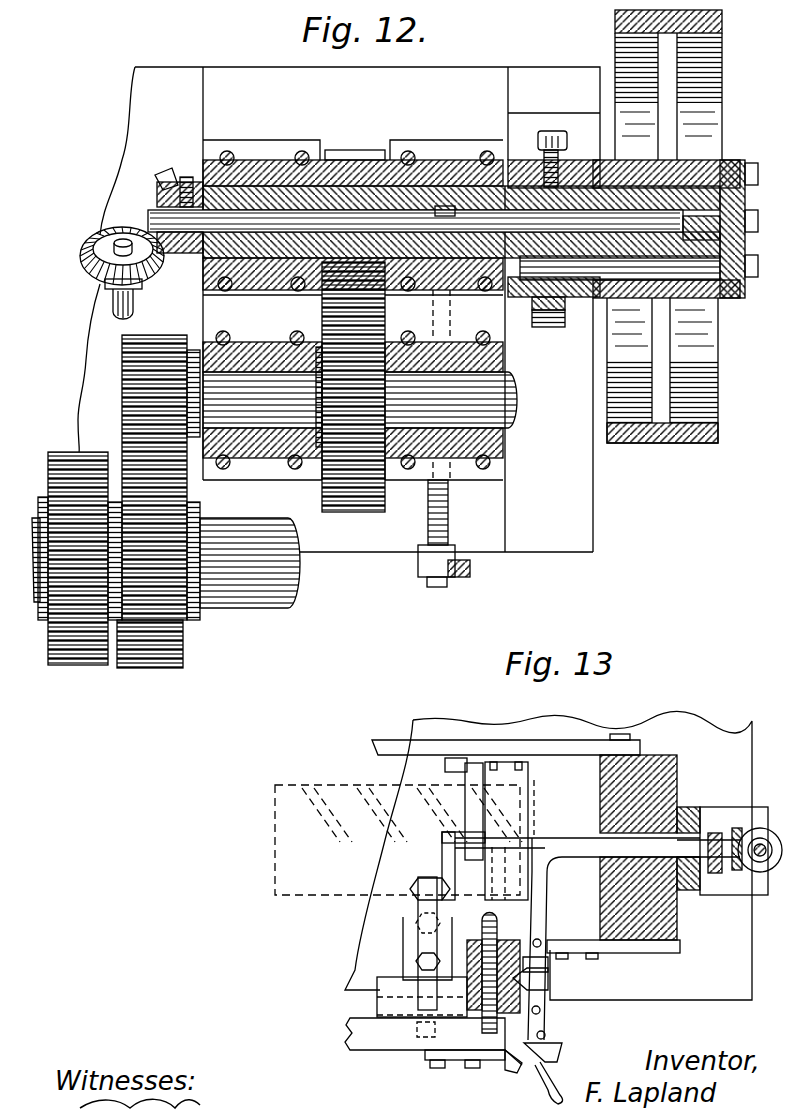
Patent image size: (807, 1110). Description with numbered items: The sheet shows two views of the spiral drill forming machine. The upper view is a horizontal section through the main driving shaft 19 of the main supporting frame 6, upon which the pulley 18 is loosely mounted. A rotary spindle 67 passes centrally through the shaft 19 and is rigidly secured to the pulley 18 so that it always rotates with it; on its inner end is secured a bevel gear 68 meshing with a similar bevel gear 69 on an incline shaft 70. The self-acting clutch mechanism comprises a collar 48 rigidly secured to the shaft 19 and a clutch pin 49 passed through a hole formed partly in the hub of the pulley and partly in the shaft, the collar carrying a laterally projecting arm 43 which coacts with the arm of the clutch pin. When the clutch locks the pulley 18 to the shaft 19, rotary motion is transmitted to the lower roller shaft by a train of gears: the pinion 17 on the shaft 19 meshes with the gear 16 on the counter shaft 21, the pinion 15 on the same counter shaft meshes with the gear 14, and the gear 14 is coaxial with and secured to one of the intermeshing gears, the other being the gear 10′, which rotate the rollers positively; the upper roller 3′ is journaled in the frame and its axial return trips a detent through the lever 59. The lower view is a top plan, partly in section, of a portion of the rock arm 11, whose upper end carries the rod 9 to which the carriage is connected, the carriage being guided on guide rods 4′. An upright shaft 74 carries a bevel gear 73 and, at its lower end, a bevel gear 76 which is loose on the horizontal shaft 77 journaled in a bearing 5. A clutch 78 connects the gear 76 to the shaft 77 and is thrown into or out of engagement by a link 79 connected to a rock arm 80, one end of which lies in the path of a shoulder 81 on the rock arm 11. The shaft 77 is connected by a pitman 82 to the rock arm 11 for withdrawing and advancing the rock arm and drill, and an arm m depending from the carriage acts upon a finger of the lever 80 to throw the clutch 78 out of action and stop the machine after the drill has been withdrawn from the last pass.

In FIG. 12, the main supporting frame 6 is at (594, 503).
In FIG. 12, the shaft 19 is at (257, 197).
In FIG. 12, the rotary spindle 67 is at (412, 223).
In FIG. 12, the pinion 17 is at (357, 153).
In FIG. 12, the collar 48 is at (528, 160).
In FIG. 12, the laterally projecting arm 43 is at (553, 312).
In FIG. 12, the clutch pin 49 is at (640, 262).
In FIG. 12, the pulley 18 is at (722, 23).
In FIG. 12, the bevel gear 68 is at (170, 182).
In FIG. 12, the bevel gear 69 is at (123, 232).
In FIG. 12, the incline shaft 70 is at (133, 303).
In FIG. 12, the pinion 15 is at (165, 342).
In FIG. 12, the gear 14 is at (158, 672).
In FIG. 12, the intermeshing gear 10′ is at (80, 665).
In FIG. 12, the groove-forming roller 3′ is at (268, 606).
In FIG. 12, the counter shaft 21 is at (505, 403).
In FIG. 12, the gear 16 is at (352, 504).
In FIG. 12, the lever 59 is at (455, 580).
In FIG. 13, the rock arm 11 is at (350, 1033).
In FIG. 13, the bearing 5 is at (672, 784).
In FIG. 13, the horizontal shaft 77 is at (500, 843).
In FIG. 13, the clutch 78 is at (728, 840).
In FIG. 13, the upright shaft 74 is at (772, 840).
In FIG. 13, the bevel gear 73 is at (772, 855).
In FIG. 13, the bevel gear 76 is at (740, 865).
In FIG. 13, the link 79 is at (570, 847).
In FIG. 13, the rod 9 is at (548, 990).
In FIG. 13, the rock arm 80 is at (550, 1027).
In FIG. 13, the pitman 82 is at (427, 945).
In FIG. 13, the arm m is at (518, 940).
In FIG. 13, the guide rod 4′ is at (487, 1023).
In FIG. 13, the shoulder 81 is at (503, 1063).